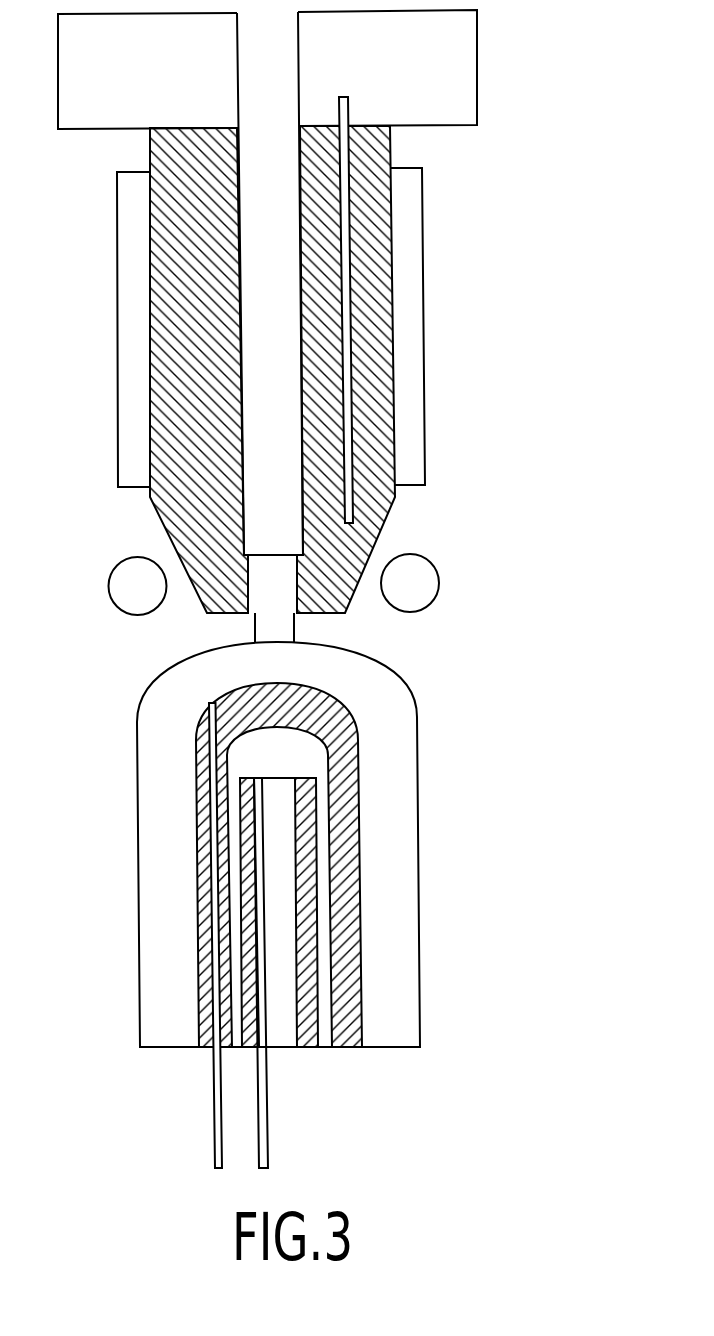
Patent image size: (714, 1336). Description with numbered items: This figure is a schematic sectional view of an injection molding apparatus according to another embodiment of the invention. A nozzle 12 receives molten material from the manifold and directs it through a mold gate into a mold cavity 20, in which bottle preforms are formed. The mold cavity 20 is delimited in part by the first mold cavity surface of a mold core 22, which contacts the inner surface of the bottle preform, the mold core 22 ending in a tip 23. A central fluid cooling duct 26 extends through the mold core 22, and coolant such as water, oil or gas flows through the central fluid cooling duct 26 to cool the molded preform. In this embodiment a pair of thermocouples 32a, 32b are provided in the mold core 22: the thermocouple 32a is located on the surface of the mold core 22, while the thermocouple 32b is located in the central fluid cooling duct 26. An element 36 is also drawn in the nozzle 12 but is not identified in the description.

The nozzle 12 is at (477, 200).
The mold cavity 20 is at (400, 852).
The mold core 22 is at (360, 803).
The tip 23 is at (275, 683).
The central fluid cooling duct 26 is at (283, 937).
The thermocouple 32a is at (213, 973).
The thermocouple 32b is at (270, 1107).
The pin 36 is at (347, 280).